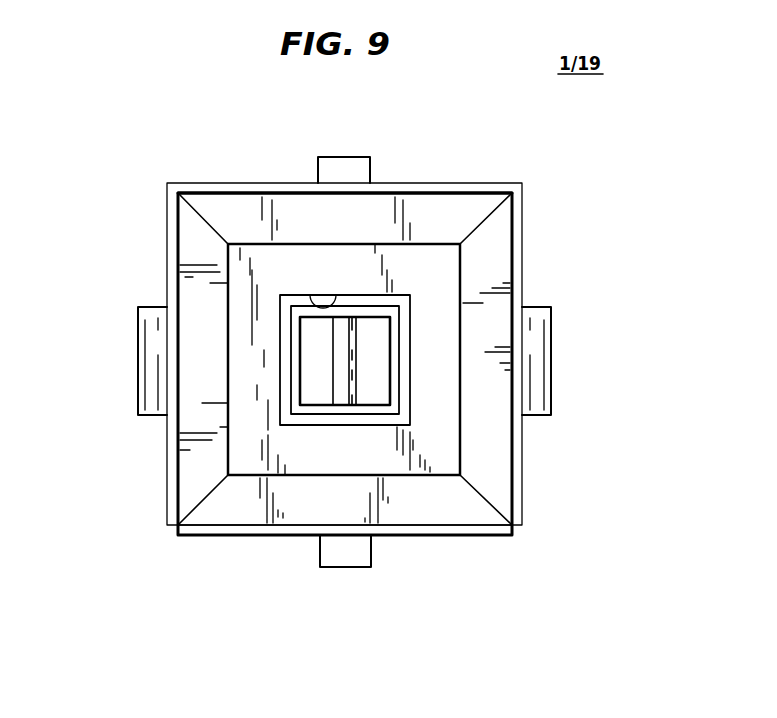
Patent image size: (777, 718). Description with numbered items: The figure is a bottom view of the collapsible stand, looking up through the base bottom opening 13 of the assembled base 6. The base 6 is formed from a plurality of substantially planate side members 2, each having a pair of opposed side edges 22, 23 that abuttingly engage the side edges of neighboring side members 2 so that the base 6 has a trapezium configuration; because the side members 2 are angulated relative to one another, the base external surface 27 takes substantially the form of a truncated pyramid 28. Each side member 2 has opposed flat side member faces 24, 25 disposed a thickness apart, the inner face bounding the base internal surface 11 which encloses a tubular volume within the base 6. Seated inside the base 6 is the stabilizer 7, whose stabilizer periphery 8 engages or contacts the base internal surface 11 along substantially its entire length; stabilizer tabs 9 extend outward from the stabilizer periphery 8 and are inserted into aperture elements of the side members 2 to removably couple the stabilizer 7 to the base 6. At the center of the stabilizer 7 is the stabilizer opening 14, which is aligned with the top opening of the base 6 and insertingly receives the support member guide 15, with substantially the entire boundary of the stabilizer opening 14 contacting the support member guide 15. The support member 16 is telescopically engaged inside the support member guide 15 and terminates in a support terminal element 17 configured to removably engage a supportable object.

The side member 2 is at (480, 169).
The base 6 is at (337, 140).
The base external surface 27 is at (337, 140).
The truncated pyramid 28 is at (236, 171).
The stabilizer 7 is at (453, 434).
The stabilizer periphery 8 is at (228, 457).
The stabilizer tab 9 is at (348, 167).
The base internal surface 11 is at (140, 309).
The side member face 24 is at (193, 231).
The base bottom opening 13 is at (420, 208).
The stabilizer opening 14 is at (337, 306).
The support member guide 15 is at (425, 312).
The support member 16 is at (407, 306).
The support terminal element 17 is at (566, 341).
The side edge 22 is at (176, 193).
The side edge 23 is at (168, 192).
The side member face 25 is at (167, 253).